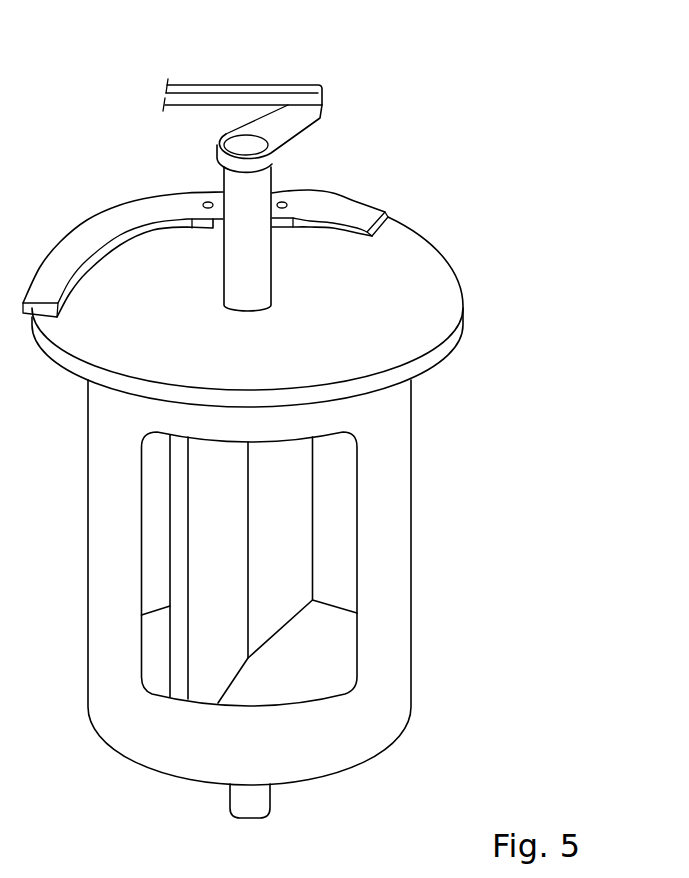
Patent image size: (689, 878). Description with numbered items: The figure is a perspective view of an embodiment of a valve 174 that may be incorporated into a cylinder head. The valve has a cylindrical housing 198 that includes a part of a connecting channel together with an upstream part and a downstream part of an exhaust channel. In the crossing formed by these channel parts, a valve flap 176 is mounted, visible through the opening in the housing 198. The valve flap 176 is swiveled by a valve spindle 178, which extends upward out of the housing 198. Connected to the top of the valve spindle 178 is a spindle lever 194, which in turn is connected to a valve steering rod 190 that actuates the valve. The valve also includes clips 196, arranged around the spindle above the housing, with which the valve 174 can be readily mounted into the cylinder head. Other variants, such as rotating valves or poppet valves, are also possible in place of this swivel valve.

The valve 174 is at (284, 415).
The valve flap 176 is at (220, 548).
The valve spindle 178 is at (255, 260).
The valve steering rod 190 is at (238, 92).
The spindle lever 194 is at (290, 122).
The clips 196 is at (362, 212).
The cylindrical housing 198 is at (387, 572).